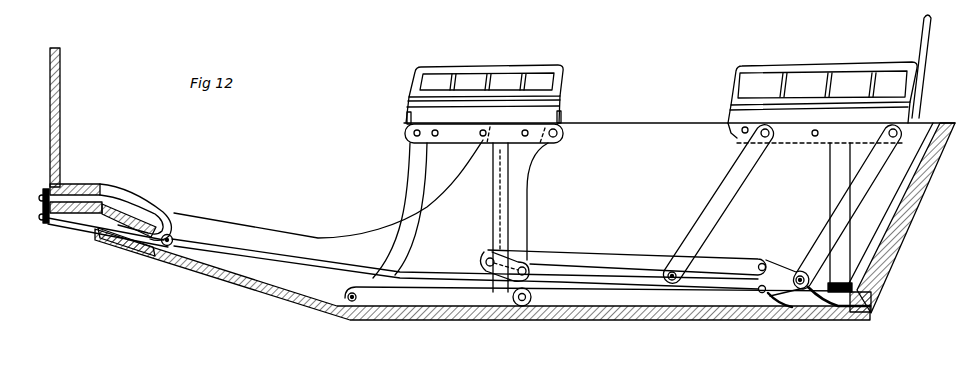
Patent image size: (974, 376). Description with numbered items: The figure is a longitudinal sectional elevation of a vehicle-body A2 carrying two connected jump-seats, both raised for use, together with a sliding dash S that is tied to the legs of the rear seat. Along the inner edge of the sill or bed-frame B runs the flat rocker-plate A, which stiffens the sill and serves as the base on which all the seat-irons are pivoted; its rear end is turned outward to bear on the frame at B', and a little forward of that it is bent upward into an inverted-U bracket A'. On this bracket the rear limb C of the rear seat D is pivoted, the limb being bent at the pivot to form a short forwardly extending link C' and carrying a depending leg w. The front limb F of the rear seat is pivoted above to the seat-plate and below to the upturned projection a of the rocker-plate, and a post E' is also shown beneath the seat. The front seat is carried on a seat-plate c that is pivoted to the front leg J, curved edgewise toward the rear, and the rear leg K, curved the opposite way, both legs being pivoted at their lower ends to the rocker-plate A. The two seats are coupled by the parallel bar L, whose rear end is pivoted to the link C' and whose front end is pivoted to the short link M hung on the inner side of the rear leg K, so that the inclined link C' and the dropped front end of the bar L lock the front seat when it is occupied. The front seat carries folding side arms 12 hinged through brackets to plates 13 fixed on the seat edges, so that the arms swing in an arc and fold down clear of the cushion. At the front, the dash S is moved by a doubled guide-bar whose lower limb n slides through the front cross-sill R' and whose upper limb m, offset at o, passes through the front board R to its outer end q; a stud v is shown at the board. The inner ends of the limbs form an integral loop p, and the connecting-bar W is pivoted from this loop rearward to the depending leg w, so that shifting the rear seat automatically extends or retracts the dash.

The adjustable dash S is at (62, 117).
The outer end of upper limb q is at (40, 198).
The bolt v is at (40, 217).
The rail or front board R is at (110, 205).
The upper limb of guide-bar m is at (145, 213).
The lower limb of guide-bar n is at (87, 233).
The front cross-sill R' is at (126, 247).
The integral loop or eye p is at (181, 242).
The offset bend o is at (173, 224).
The connecting-bar W is at (465, 263).
The rocker-plate A is at (597, 315).
The vertical bracket A' is at (482, 286).
The vehicle-body A2 is at (783, 209).
The side arm 12 is at (679, 86).
The plate 13 is at (406, 124).
The rear limb of rear seat C is at (653, 206).
The front leg of front seat J is at (427, 207).
The rear leg of front seat K is at (526, 190).
The parallel bar L is at (627, 254).
The short link M is at (485, 262).
The seat-plate c is at (527, 271).
The rear seat D is at (916, 116).
The post E' is at (829, 217).
The front limb of rear seat F is at (750, 174).
The upwardly-turned projection a is at (686, 273).
The short link C' is at (815, 279).
The depending leg w is at (766, 295).
The sill or bed-frame B is at (873, 302).
The bearing point B' is at (901, 218).